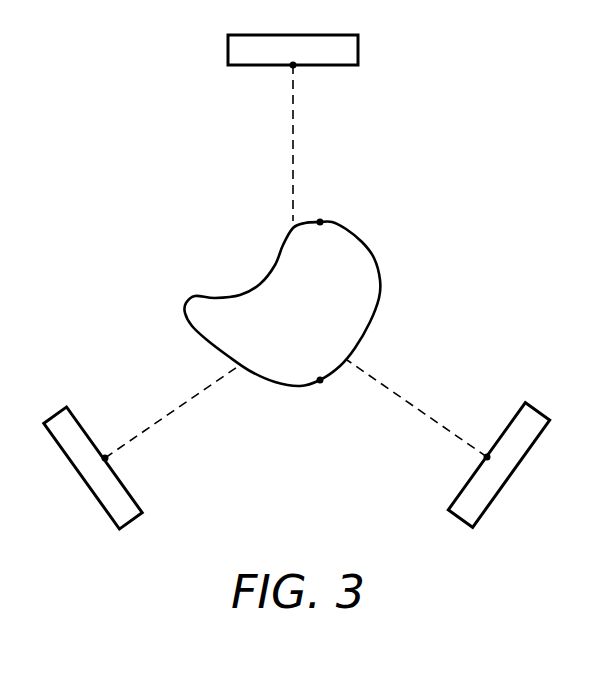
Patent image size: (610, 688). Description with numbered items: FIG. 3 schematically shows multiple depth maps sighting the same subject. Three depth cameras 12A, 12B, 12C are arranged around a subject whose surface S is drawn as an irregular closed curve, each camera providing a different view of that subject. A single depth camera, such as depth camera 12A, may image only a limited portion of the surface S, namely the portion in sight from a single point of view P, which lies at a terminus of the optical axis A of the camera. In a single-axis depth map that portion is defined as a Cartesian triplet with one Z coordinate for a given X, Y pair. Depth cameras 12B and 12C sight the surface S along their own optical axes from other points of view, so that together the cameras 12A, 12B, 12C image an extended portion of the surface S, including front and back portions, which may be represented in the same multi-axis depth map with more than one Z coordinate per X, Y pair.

The depth camera 12A is at (293, 50).
The depth camera 12B is at (448, 443).
The depth camera 12C is at (142, 447).
The surface S is at (292, 308).
The point of view P is at (301, 77).
The optical axis A is at (290, 143).